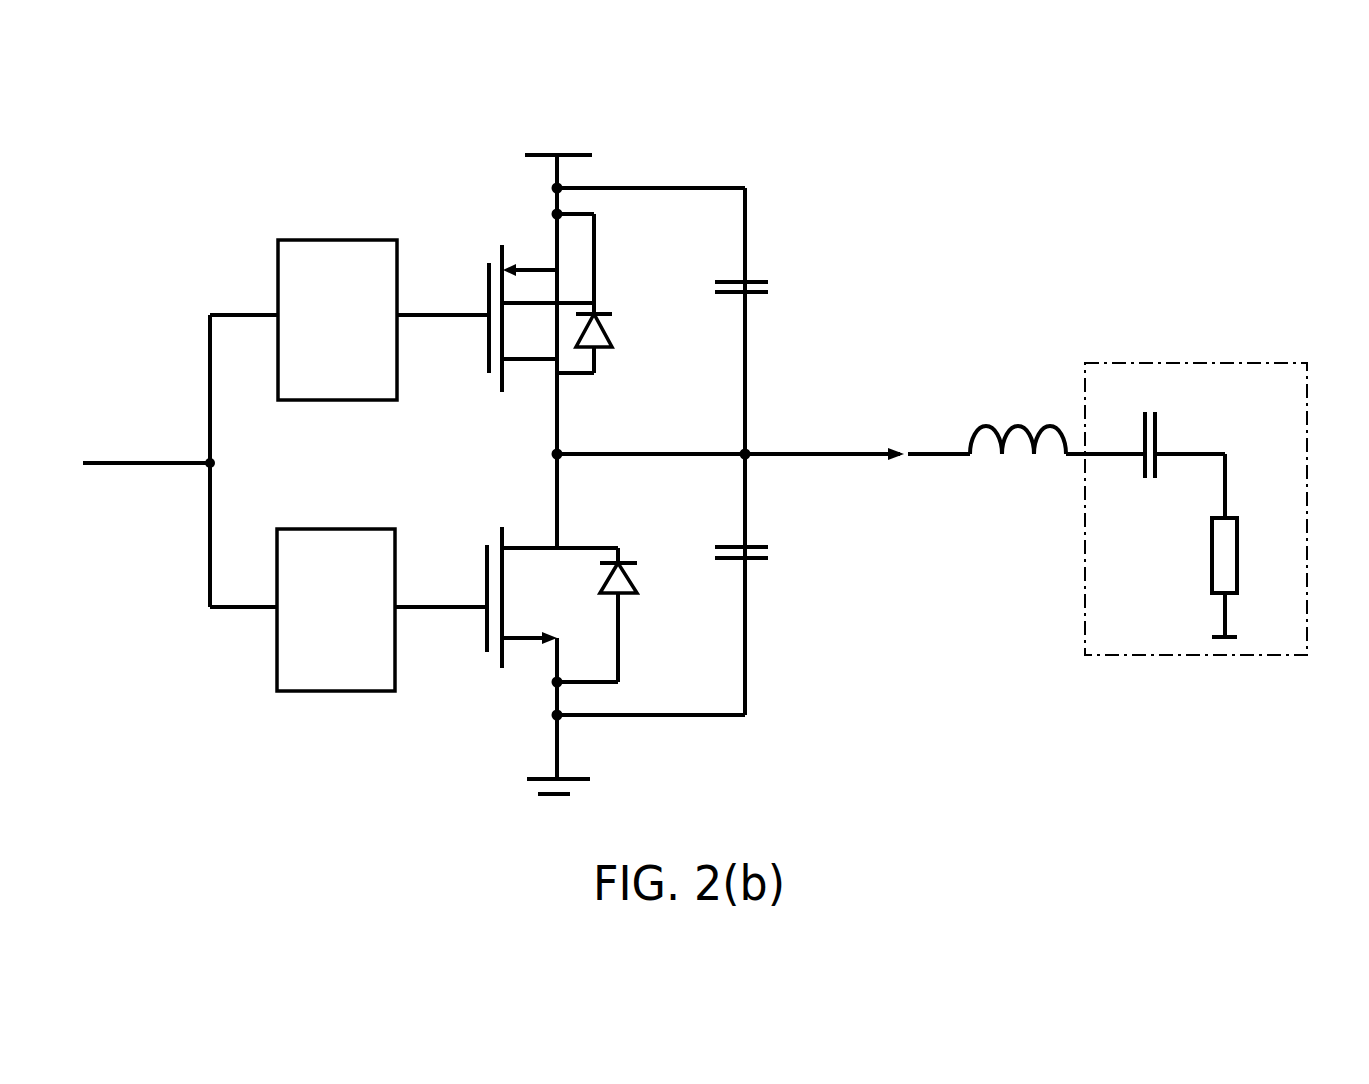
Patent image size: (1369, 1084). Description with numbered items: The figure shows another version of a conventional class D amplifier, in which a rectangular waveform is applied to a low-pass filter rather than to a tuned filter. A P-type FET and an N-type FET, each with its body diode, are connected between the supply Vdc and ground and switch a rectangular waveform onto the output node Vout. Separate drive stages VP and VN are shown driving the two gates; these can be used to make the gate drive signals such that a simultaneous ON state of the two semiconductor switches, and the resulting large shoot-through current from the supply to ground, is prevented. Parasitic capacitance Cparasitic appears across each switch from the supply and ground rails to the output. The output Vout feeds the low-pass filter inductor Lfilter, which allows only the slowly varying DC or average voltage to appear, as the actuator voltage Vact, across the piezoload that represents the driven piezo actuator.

The DC supply voltage Vdc is at (569, 139).
The VP drive stage VP is at (383, 311).
The VN drive stage VN is at (382, 610).
The parasitic capacitance Cparasitic is at (871, 428).
The output voltage node Vout is at (772, 435).
The low-pass filter Lfilter is at (1004, 406).
The actuator voltage Vact is at (1084, 424).
The piezo actuator load piezoload is at (1213, 509).